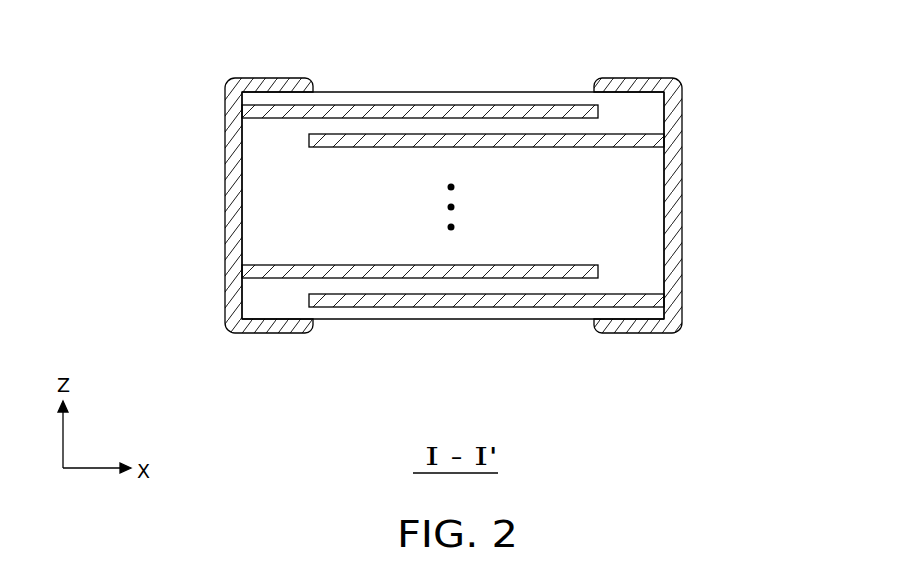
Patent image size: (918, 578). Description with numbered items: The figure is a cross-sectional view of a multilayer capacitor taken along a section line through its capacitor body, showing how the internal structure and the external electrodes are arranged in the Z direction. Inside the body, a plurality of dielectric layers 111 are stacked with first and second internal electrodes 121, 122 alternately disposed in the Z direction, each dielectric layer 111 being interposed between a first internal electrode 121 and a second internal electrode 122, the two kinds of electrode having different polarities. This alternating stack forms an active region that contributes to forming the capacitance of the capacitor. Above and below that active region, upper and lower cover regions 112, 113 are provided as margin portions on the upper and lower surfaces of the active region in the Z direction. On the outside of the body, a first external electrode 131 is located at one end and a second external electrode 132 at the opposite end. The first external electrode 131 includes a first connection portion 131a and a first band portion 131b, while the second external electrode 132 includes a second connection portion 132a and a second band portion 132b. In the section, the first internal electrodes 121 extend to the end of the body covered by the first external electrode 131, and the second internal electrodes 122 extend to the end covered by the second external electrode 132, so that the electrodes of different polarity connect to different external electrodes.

The dielectric layers 111 is at (525, 287).
The upper cover region 112 is at (460, 98).
The lower cover region 113 is at (460, 312).
The first internal electrode 121 is at (290, 112).
The second internal electrode 122 is at (573, 298).
The first external electrode 131 is at (188, 205).
The first connection portion 131a is at (227, 225).
The first band portion 131b is at (272, 328).
The second external electrode 132 is at (717, 205).
The second connection portion 132a is at (677, 225).
The second band portion 132b is at (633, 327).